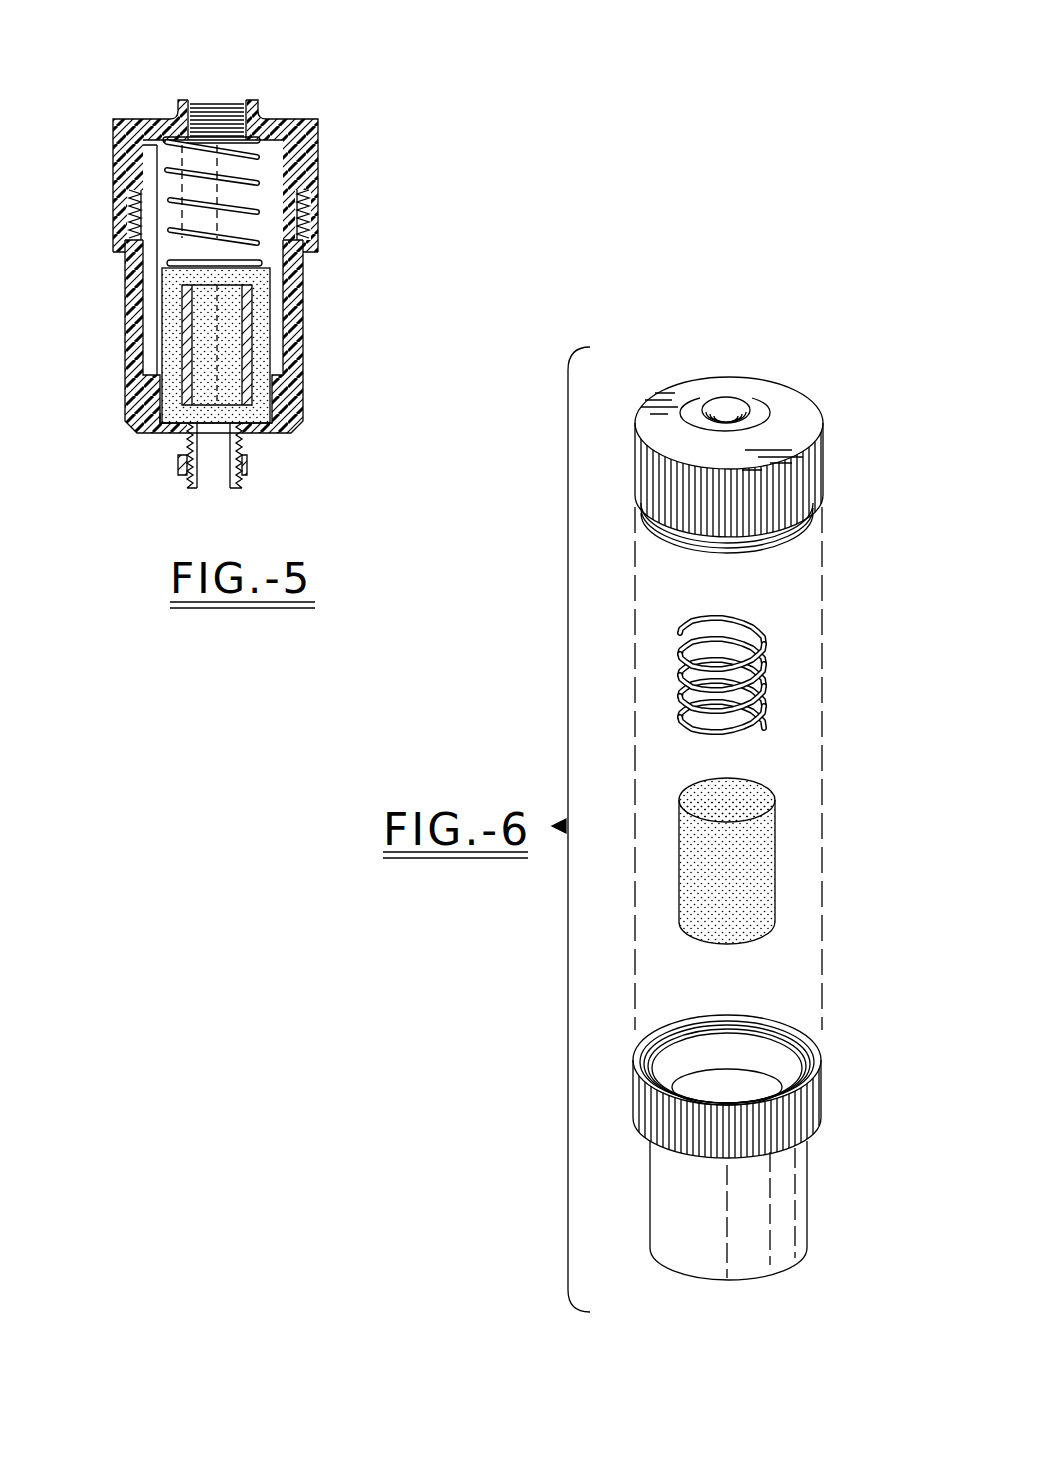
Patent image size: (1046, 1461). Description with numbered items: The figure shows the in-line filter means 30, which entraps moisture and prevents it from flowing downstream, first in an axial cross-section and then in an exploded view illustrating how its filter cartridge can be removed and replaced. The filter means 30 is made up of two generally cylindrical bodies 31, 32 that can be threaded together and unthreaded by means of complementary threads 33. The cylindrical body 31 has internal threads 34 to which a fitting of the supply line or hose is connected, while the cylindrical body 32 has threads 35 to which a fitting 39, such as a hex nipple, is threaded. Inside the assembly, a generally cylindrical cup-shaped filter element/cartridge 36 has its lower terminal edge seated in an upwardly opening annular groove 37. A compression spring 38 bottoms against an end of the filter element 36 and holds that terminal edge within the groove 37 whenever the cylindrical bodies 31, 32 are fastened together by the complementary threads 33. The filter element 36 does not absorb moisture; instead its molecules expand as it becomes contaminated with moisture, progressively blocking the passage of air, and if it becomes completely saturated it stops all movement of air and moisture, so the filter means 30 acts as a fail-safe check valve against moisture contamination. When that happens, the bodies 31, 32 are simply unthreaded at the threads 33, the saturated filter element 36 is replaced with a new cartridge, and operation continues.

In FIG. 5, the in-line filter means 30 is at (304, 115).
In FIG. 6, the in-line filter means 30 is at (766, 367).
In FIG. 5, the cylindrical body 31 is at (320, 142).
In FIG. 6, the cylindrical body 31 is at (815, 415).
In FIG. 5, the cylindrical body 32 is at (305, 302).
In FIG. 6, the cylindrical body 32 is at (807, 1160).
In FIG. 5, the complementary threads 33 is at (303, 230).
In FIG. 6, the complementary threads 33 is at (738, 552).
In FIG. 5, the internal threads 34 is at (213, 107).
In FIG. 6, the internal threads 34 is at (725, 403).
In FIG. 5, the threads 35 is at (200, 427).
In FIG. 5, the filter element/cartridge 36 is at (263, 328).
In FIG. 6, the filter element/cartridge 36 is at (740, 787).
In FIG. 5, the annular groove 37 is at (163, 413).
In FIG. 5, the compression spring 38 is at (167, 170).
In FIG. 6, the compression spring 38 is at (715, 608).
In FIG. 5, the fitting 39 is at (250, 467).